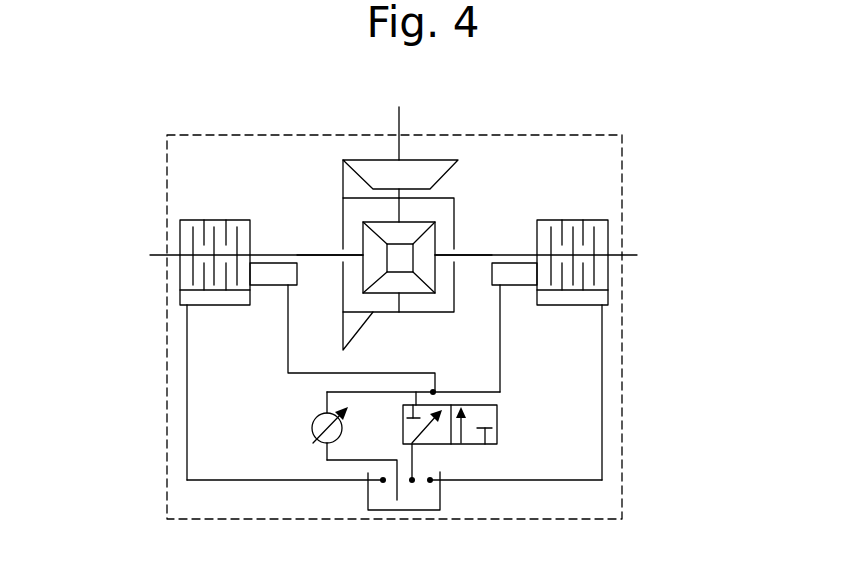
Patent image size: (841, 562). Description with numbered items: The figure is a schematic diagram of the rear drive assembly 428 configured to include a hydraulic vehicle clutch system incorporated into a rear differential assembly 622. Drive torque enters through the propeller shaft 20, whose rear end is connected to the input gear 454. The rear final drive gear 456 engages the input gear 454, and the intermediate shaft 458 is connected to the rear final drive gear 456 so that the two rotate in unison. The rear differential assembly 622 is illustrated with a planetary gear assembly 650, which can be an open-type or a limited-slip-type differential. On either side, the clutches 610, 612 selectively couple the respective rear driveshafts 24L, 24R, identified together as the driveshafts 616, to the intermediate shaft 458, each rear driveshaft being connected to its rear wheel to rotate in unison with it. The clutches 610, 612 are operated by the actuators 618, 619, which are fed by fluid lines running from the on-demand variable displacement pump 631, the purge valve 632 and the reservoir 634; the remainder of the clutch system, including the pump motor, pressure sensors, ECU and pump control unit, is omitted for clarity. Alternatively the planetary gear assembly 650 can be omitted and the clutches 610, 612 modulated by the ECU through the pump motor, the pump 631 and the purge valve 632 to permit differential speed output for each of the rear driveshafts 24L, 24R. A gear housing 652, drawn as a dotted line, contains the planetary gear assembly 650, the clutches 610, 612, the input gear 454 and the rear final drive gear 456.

The rear drive assembly 428 is at (150, 112).
The rear differential assembly 622 is at (295, 124).
The propeller shaft 20 is at (400, 123).
The clutch 610 is at (188, 220).
The clutch 612 is at (600, 220).
The input gear 454 is at (456, 166).
The rear final drive gear 456 is at (342, 180).
The planetary gear assembly 650 is at (415, 313).
The intermediate shaft 458 is at (322, 259).
The actuator 618 is at (268, 263).
The actuator 619 is at (523, 262).
The rear driveshaft 24L is at (158, 253).
The rear driveshaft 24R is at (627, 257).
The axle shafts 616 is at (408, 250).
The on-demand variable displacement pump 631 is at (312, 427).
The purge valve 632 is at (497, 428).
The reservoir 634 is at (440, 505).
The gear housing 652 is at (623, 378).